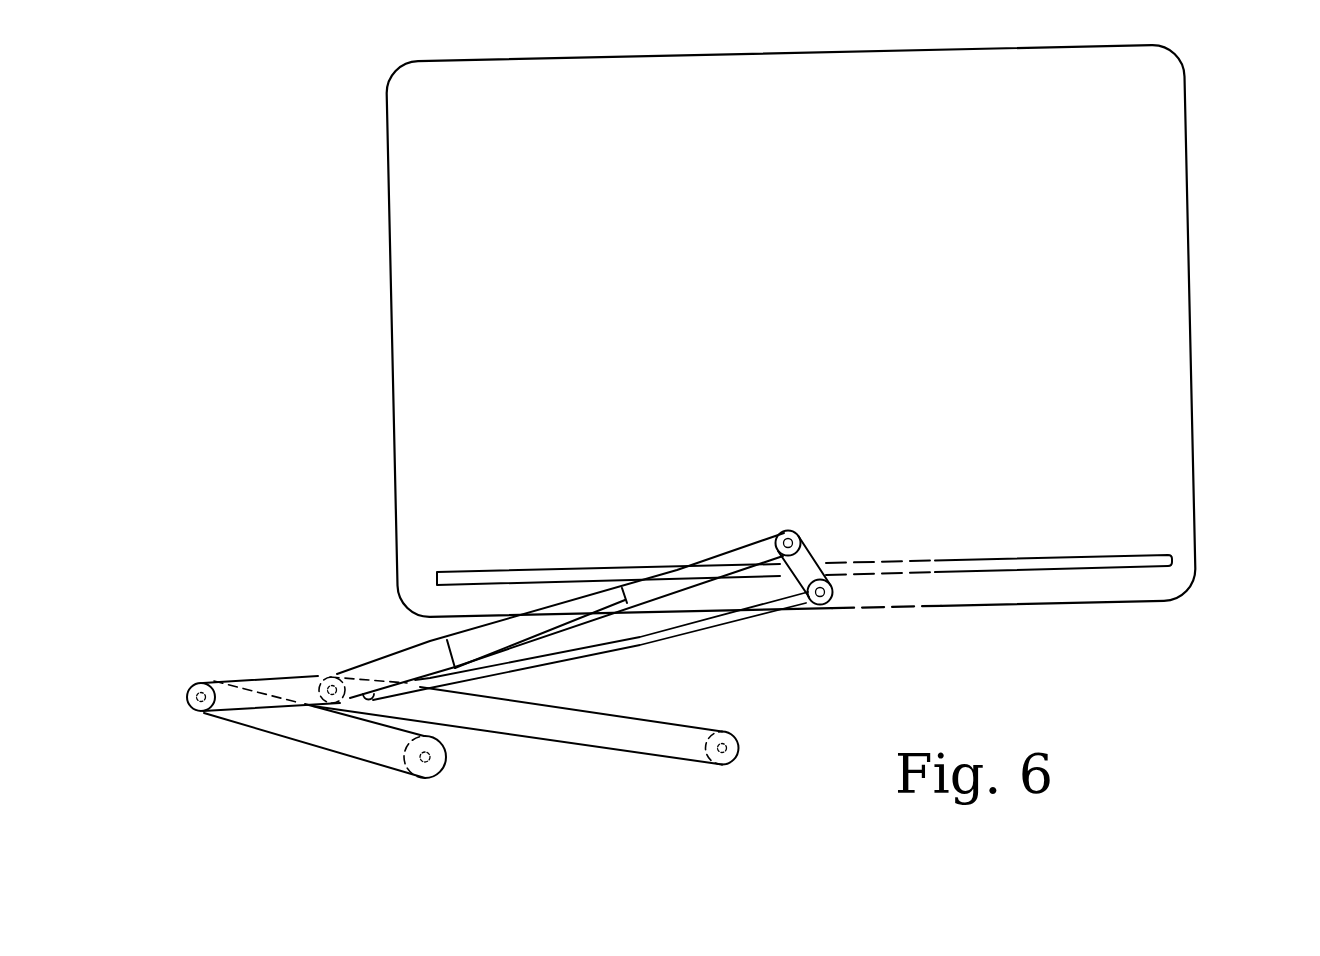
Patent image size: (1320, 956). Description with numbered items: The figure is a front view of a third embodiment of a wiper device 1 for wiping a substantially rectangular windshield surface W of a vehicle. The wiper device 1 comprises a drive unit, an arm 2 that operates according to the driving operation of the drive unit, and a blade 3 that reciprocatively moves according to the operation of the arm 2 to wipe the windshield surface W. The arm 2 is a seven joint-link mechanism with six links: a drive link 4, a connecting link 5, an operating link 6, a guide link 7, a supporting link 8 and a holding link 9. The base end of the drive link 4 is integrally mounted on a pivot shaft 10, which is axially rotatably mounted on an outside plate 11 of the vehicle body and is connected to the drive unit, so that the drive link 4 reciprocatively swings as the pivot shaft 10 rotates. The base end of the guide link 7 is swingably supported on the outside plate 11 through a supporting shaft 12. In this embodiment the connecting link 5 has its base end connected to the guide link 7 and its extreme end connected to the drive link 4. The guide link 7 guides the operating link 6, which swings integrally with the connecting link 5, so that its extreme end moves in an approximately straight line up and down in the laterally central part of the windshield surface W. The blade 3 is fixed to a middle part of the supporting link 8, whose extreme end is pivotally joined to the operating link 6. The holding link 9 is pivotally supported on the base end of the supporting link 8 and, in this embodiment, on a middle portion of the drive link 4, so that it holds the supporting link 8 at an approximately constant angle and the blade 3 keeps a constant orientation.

The wiper device 1 is at (668, 461).
The arm 2 is at (378, 629).
The blade 3 is at (1047, 556).
The drive link 4 is at (526, 770).
The connecting link 5 is at (283, 682).
The operating link 6 is at (501, 632).
The guide link 7 is at (325, 778).
The supporting link 8 is at (806, 563).
The holding link 9 is at (676, 630).
The pivot shaft 10 is at (724, 770).
The outside plate 11 is at (987, 691).
The supporting shaft 12 is at (419, 776).
The windshield surface W is at (1187, 201).